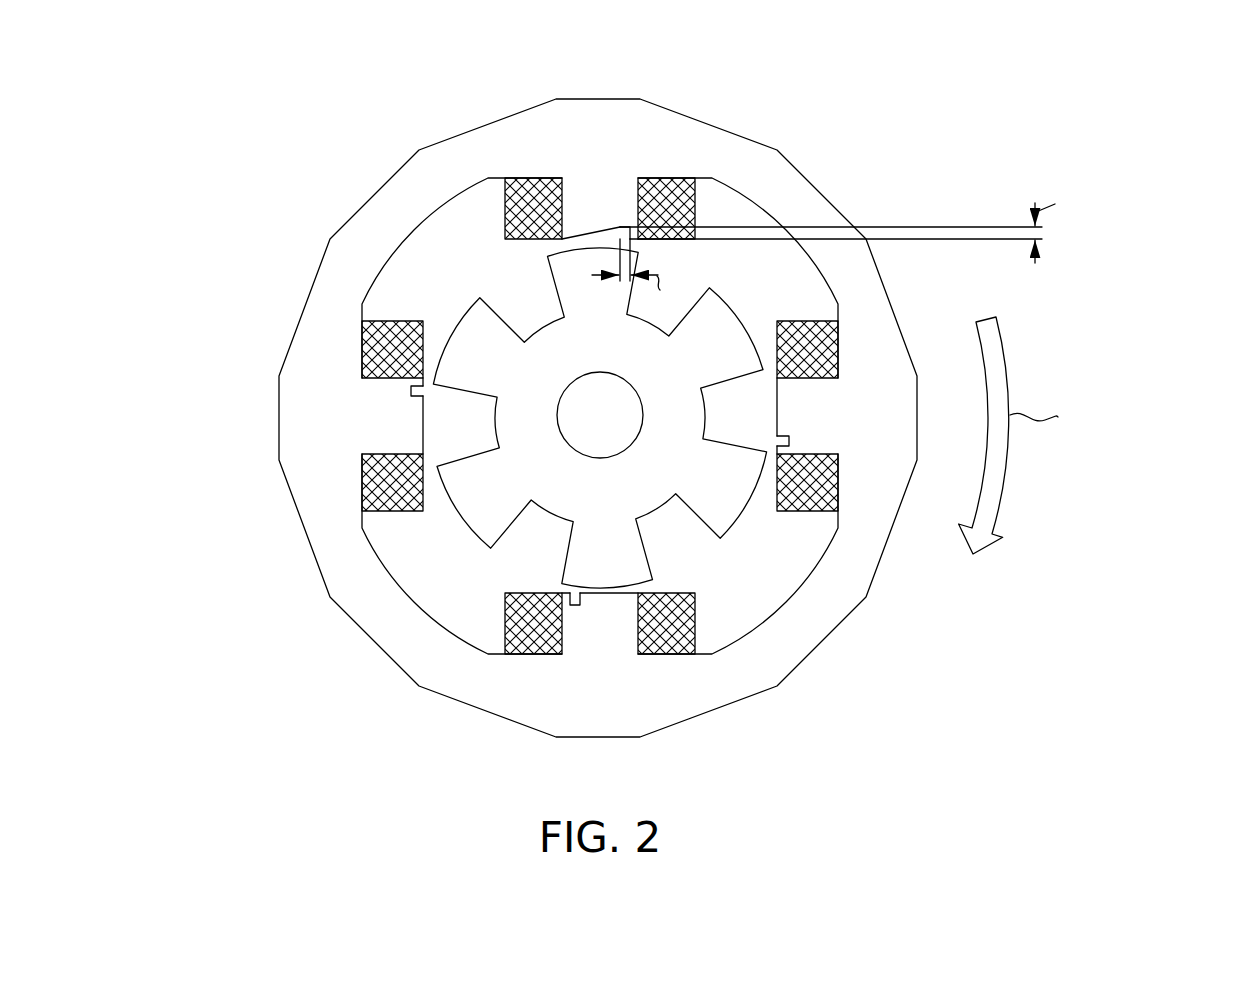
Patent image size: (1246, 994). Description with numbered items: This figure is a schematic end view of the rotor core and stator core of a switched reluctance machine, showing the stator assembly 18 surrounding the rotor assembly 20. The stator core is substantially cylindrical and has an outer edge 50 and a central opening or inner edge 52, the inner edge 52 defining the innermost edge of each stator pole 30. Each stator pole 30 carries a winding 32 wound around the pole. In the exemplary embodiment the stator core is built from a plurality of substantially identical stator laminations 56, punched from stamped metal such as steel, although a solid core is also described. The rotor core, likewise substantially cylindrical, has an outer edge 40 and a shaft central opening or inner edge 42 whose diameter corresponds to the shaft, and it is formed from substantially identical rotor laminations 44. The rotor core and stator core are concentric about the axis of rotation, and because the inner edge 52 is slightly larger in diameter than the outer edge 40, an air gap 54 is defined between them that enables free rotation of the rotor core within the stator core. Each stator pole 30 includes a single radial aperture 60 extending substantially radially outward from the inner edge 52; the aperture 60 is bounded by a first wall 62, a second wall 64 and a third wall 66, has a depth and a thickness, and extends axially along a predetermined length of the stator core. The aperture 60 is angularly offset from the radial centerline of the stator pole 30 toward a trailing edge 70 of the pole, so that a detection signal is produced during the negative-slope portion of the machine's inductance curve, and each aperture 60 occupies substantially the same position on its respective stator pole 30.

The stator assembly 18 is at (373, 191).
The rotor assembly 20 is at (460, 316).
The stator pole 30 is at (578, 207).
The winding 32 is at (505, 207).
The outer edge 40 is at (737, 513).
The inner edge 42 is at (573, 453).
The rotor lamination 44 is at (453, 518).
The outer edge 50 is at (848, 220).
The inner edge 52 is at (598, 232).
The air gap 54 is at (650, 582).
The stator lamination 56 is at (897, 103).
The radial aperture 60 is at (612, 249).
The first wall 62 is at (613, 243).
The second wall 64 is at (633, 243).
The third wall 66 is at (626, 228).
The trailing edge 70 is at (634, 192).